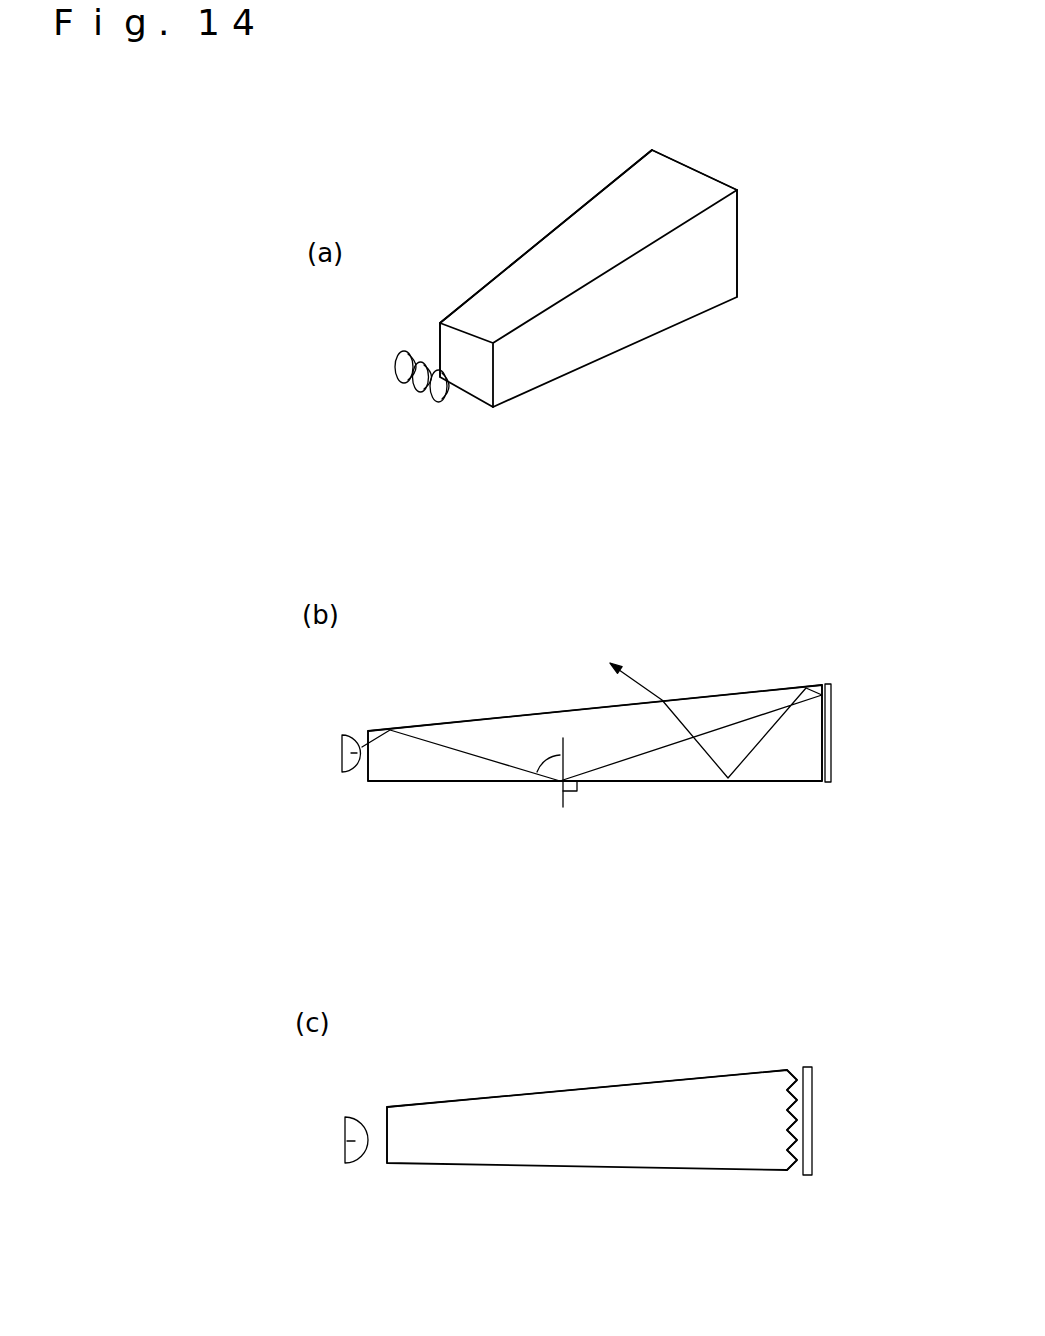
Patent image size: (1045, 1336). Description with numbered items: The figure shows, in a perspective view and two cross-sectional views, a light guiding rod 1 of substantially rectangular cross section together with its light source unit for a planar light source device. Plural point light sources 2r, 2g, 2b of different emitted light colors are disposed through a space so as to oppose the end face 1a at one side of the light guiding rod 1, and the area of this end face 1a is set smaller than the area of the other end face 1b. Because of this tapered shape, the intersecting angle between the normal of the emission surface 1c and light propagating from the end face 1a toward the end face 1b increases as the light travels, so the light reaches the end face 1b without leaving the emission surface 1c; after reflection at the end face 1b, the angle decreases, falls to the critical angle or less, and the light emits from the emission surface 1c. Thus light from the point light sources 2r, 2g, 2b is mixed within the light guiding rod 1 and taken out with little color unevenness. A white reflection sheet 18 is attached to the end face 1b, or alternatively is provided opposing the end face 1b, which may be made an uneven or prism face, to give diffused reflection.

The light guiding rod 1 is at (740, 293).
The end face 1a is at (477, 378).
The end face 1b is at (738, 233).
The emission surface 1c is at (582, 247).
The reflection sheet 18 is at (832, 753).
The point light source 2r is at (437, 403).
The point light source 2g is at (416, 393).
The point light source 2b is at (396, 375).